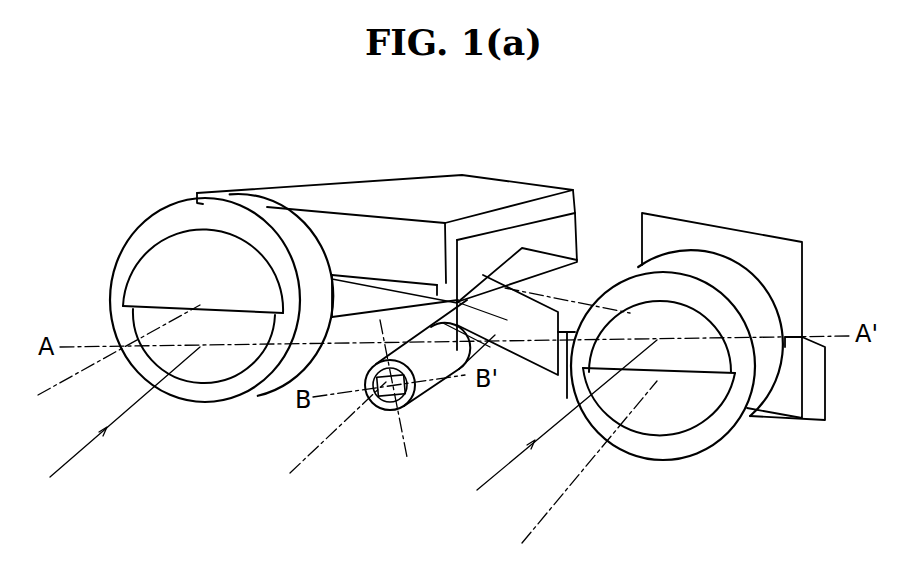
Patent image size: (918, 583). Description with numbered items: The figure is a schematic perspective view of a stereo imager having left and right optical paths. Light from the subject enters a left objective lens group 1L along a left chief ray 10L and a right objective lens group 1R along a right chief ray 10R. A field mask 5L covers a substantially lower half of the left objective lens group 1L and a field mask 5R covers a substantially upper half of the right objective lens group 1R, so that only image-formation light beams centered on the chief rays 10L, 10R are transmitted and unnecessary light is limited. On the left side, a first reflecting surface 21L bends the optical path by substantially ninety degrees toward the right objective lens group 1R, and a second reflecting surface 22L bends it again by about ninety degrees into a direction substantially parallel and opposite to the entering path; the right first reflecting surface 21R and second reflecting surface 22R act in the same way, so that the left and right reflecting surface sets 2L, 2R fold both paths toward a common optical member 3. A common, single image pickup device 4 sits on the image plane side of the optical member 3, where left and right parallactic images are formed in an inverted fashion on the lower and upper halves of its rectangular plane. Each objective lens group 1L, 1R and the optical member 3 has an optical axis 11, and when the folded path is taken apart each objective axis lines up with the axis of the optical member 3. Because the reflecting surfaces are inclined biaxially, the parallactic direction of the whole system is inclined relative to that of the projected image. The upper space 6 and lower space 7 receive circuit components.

The right objective lens group 1R is at (152, 227).
The left objective lens group 1L is at (708, 450).
The field mask 5R is at (187, 247).
The field mask 5L is at (660, 430).
The right body 2R is at (457, 128).
The left body 2L is at (788, 130).
The right first reflecting surface 21R is at (345, 293).
The right second reflecting surface 22R is at (445, 280).
The left first reflecting surface 21L is at (752, 247).
The left second reflecting surface 22L is at (533, 230).
The upper space 6 is at (496, 198).
The lower space 7 is at (802, 415).
The common optical member 3 is at (427, 388).
The image pickup device 4 is at (380, 410).
The right chief ray 10R is at (90, 440).
The left chief ray 10L is at (512, 463).
The optical axis 11 is at (75, 378).